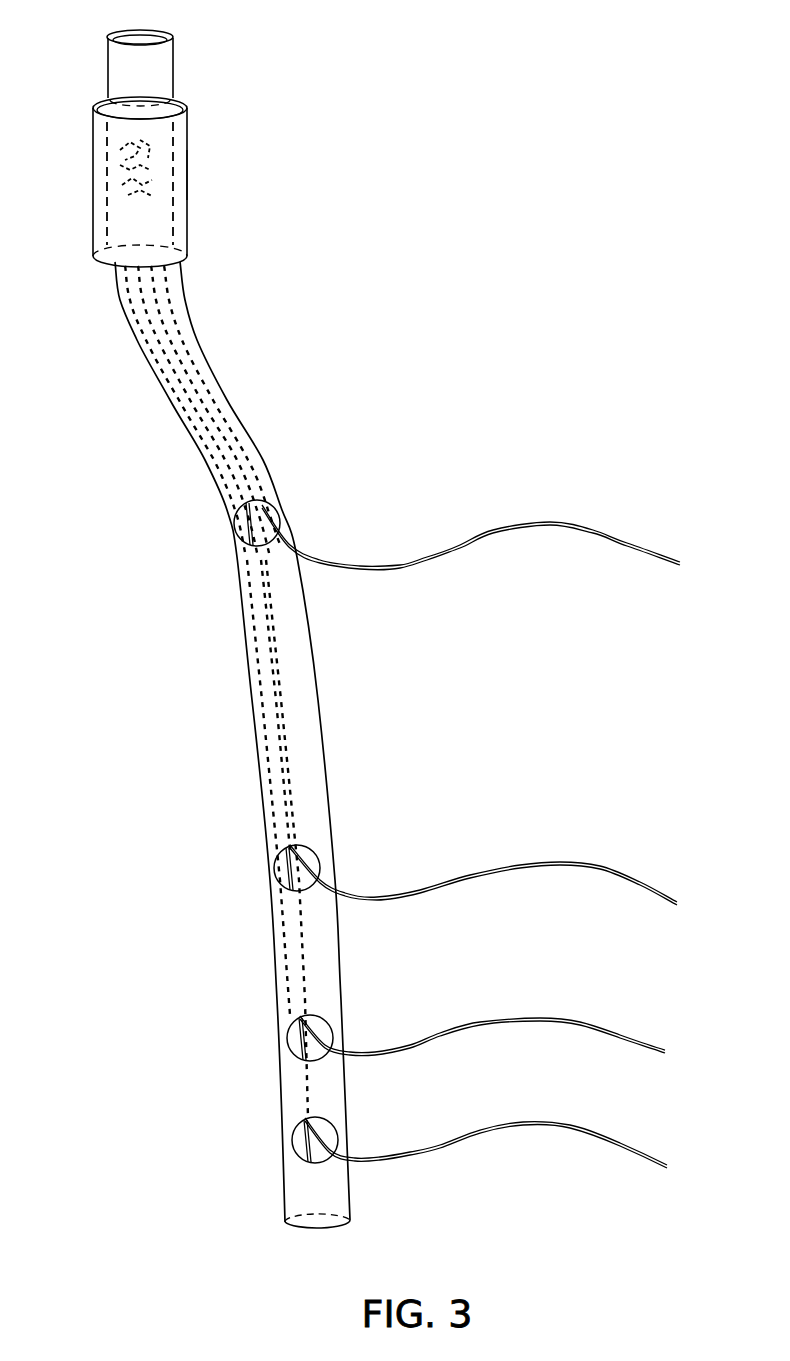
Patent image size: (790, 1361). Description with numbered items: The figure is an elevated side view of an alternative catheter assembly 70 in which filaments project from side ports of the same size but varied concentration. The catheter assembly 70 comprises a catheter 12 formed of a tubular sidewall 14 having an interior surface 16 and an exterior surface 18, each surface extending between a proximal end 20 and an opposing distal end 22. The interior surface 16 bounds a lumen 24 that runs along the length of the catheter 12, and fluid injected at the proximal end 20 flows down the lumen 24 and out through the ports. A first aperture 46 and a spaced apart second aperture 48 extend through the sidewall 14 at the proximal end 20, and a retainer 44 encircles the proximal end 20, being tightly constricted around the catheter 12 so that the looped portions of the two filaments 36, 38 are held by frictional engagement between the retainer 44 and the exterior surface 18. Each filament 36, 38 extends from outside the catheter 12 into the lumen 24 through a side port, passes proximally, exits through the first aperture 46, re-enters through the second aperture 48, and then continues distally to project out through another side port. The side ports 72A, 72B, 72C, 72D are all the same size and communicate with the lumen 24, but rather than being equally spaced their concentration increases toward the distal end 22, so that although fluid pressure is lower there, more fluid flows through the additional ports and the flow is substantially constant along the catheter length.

The catheter 12 is at (240, 384).
The tubular sidewall 14 is at (173, 34).
The interior surface 16 is at (128, 30).
The exterior surface 18 is at (113, 50).
The proximal end 20 is at (238, 210).
The distal end 22 is at (236, 1121).
The lumen 24 is at (145, 30).
The filament 36 is at (608, 528).
The filament 38 is at (597, 862).
The retainer 44 is at (182, 175).
The first aperture 46 is at (128, 143).
The second aperture 48 is at (132, 188).
The catheter assembly 70 is at (580, 228).
The side port 72A is at (267, 512).
The side port 72B is at (312, 858).
The side port 72C is at (322, 1028).
The side port 72D is at (325, 1130).